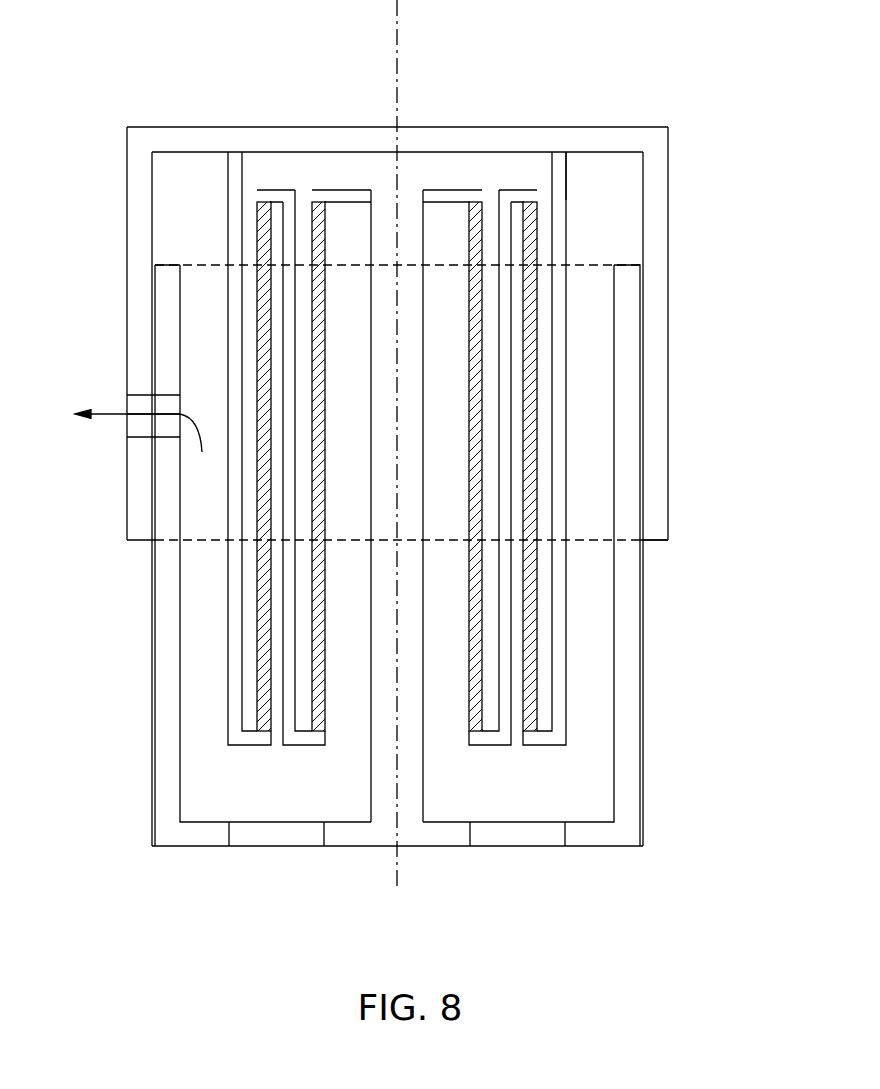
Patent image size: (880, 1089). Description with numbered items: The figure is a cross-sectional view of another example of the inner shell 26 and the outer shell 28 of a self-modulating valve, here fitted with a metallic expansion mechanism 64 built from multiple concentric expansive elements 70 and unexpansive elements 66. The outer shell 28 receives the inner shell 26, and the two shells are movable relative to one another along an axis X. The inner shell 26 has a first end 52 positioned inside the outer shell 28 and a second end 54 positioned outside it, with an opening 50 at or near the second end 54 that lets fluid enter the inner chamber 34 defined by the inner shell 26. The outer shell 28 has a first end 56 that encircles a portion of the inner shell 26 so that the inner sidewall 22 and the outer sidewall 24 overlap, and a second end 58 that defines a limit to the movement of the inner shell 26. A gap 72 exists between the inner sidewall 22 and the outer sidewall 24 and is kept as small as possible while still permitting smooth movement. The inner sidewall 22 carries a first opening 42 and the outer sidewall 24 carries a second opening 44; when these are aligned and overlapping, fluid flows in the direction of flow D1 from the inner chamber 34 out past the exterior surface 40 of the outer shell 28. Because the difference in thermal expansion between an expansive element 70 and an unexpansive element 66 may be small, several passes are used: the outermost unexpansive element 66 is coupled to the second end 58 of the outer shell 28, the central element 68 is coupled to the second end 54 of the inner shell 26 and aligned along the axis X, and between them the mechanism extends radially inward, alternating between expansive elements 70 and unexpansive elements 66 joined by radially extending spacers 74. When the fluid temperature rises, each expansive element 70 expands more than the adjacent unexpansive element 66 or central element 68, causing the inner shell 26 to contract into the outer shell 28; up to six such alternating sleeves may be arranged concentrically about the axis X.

The inner sidewall 22 is at (628, 465).
The outer sidewall 24 is at (655, 390).
The inner shell 26 is at (645, 730).
The outer shell 28 is at (127, 322).
The inner chamber 34 is at (601, 434).
The exterior surface 40 is at (669, 272).
The first opening 42 is at (167, 410).
The second opening 44 is at (132, 420).
The opening 50 is at (272, 852).
The first end 52 is at (170, 263).
The second end 54 is at (195, 848).
The first end 56 is at (130, 545).
The second end 58 is at (143, 127).
The metallic expansion mechanism 64 is at (567, 188).
The unexpansive element 66 is at (295, 453).
The central element 68 is at (387, 805).
The expansive element 70 is at (323, 362).
The gap 72 is at (642, 545).
The spacer 74 is at (333, 190).
The direction of fluid flow D1 is at (117, 413).
The axis X is at (396, 463).